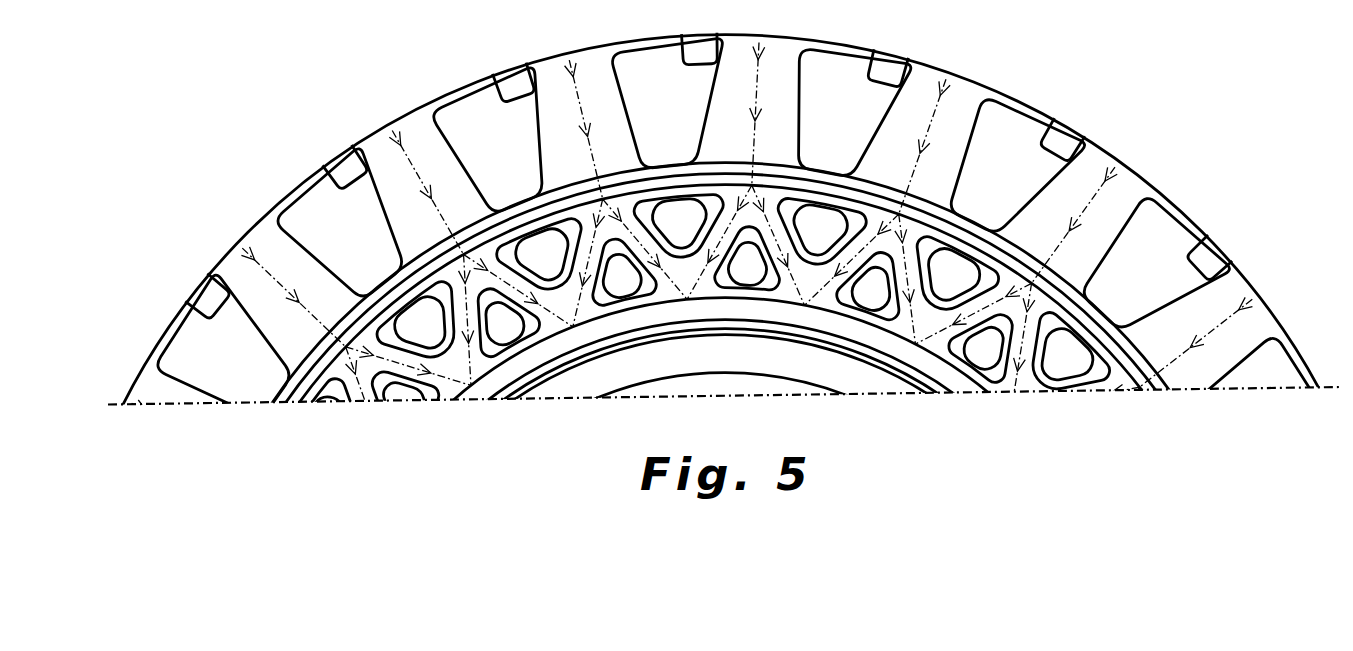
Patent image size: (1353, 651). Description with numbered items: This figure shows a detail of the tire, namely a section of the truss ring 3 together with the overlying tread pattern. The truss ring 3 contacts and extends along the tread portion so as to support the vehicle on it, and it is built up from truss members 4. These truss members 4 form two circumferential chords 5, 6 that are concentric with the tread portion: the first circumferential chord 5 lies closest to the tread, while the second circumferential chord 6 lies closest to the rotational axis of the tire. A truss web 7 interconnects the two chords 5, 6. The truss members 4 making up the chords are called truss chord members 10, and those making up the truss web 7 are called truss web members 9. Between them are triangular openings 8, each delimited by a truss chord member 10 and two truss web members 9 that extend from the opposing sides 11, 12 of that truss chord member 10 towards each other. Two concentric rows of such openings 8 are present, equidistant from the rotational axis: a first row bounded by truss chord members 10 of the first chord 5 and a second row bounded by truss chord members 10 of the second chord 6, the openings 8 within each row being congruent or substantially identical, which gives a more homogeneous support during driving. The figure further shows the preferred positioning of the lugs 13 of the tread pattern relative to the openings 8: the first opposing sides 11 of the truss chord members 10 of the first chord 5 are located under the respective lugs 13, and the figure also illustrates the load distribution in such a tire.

The truss ring 3 is at (1130, 378).
The truss members 4 is at (742, 379).
The first circumferential chord 5 is at (742, 379).
The second circumferential chord 6 is at (775, 366).
The truss web 7 is at (725, 379).
The openings 8 is at (1000, 300).
The truss web members 9 is at (990, 240).
The truss chord members 10 is at (968, 373).
The first opposing side 11 is at (880, 230).
The second opposing side 12 is at (1030, 200).
The lugs 13 is at (957, 107).